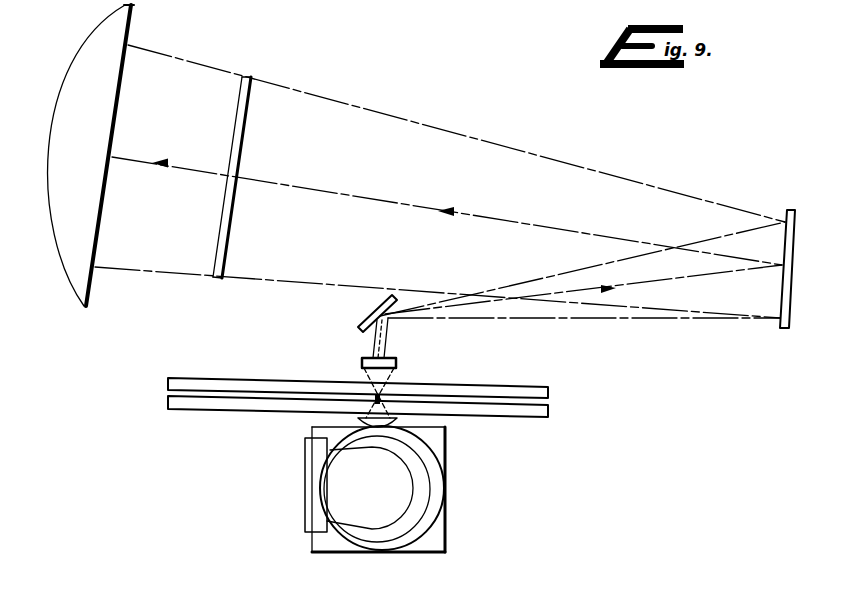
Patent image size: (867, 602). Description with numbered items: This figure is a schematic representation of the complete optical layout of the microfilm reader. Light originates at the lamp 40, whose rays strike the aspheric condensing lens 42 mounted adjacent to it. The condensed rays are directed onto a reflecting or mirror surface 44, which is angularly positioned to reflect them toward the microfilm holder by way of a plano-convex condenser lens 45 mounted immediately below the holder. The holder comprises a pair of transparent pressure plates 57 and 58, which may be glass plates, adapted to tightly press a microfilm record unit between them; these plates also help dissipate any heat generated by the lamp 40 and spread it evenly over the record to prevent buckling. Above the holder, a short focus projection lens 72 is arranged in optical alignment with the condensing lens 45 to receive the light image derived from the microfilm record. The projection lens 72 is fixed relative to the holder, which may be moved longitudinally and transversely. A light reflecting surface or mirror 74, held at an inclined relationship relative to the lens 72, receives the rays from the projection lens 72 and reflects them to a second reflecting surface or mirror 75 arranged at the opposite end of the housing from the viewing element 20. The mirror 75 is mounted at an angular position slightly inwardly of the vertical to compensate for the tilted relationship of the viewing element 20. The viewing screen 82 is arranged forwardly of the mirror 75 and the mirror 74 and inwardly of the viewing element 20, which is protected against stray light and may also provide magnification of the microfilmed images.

The viewing element 20 is at (78, 268).
The viewing screen 82 is at (215, 262).
The mirror 74 is at (367, 309).
The projection lens 72 is at (362, 363).
The mirror 75 is at (789, 210).
The pressure plate 57 is at (549, 392).
The pressure plate 58 is at (548, 410).
The plano-convex condenser lens 45 is at (358, 421).
The mirror 44 is at (433, 537).
The aspheric condensing lens 42 is at (413, 458).
The lamp 40 is at (358, 512).